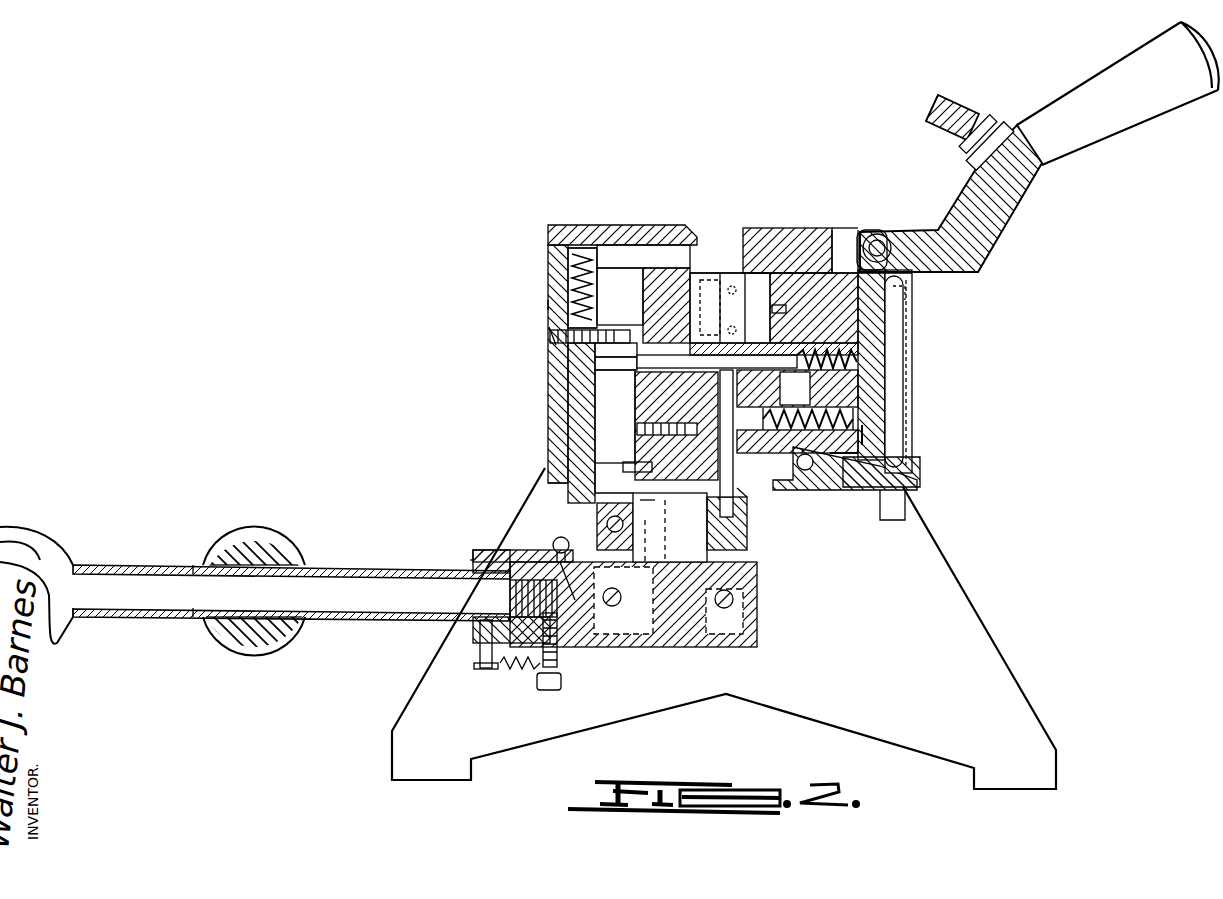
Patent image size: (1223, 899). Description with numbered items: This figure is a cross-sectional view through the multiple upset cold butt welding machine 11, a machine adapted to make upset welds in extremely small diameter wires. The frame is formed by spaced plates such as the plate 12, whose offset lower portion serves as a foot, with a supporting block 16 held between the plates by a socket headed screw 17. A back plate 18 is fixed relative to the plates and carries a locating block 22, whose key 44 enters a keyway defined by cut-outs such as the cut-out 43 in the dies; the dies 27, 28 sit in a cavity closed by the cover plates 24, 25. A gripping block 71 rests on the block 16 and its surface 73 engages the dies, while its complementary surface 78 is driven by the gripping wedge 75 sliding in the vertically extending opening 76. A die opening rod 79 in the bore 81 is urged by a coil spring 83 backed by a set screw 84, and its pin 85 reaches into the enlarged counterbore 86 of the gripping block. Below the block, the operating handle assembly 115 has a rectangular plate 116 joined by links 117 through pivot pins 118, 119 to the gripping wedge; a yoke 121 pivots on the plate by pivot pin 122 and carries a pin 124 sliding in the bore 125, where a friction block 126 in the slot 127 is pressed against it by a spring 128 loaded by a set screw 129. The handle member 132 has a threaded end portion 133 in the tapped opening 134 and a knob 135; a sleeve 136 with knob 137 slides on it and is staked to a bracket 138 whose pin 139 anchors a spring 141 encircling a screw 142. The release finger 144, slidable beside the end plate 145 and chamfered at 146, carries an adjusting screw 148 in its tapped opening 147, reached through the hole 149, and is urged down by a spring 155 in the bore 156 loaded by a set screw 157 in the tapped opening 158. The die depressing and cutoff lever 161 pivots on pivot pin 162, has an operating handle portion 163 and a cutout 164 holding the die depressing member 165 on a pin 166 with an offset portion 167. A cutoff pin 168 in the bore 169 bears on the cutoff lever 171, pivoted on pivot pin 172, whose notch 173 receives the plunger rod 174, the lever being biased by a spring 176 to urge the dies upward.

The multiple upset cold butt welding machine 11 is at (440, 325).
The plate 12 is at (955, 560).
The supporting block 16 is at (560, 405).
The socket headed screw 17 is at (716, 389).
The back plate 18 is at (905, 358).
The locating block 22 is at (895, 335).
The cover plate 24 is at (828, 228).
The cover plate 25 is at (690, 270).
The die 27 is at (778, 303).
The die 28 is at (835, 216).
The cut-out 43 is at (856, 228).
The key 44 is at (877, 222).
The gripping block 71 is at (660, 265).
The surface 73 is at (745, 245).
The gripping wedge 75 is at (555, 318).
The vertically extending opening 76 is at (548, 432).
The complementary surface 78 is at (612, 222).
The die opening rod 79 is at (760, 270).
The bore 81 is at (616, 361).
The coil spring 83 is at (870, 365).
The set screw 84 is at (814, 309).
The pin 85 is at (774, 356).
The enlarged counterbore 86 is at (729, 309).
The operating handle assembly 115 is at (420, 557).
The plate 116 is at (760, 575).
The link 117 is at (670, 527).
The pivot pin 118 is at (612, 607).
The pivot pin 119 is at (600, 520).
The yoke 121 is at (750, 538).
The pivot pin 122 is at (760, 605).
The pin 124 is at (760, 478).
The bore 125 is at (676, 426).
The friction block 126 is at (797, 388).
The slot 127 is at (880, 440).
The spring 128 is at (800, 388).
The set screw 129 is at (860, 418).
The handle member 132 is at (105, 580).
The threaded end portion 133 is at (591, 581).
The tapped opening 134 is at (508, 598).
The knob 135 is at (35, 540).
The sleeve 136 is at (350, 620).
The knob 137 is at (255, 542).
The bracket 138 is at (470, 562).
The pin 139 is at (478, 632).
The spring 141 is at (500, 668).
The screw 142 is at (551, 690).
The release finger 144 is at (548, 455).
The end plate 145 is at (548, 385).
The chamfer 146 is at (560, 478).
The tapped opening 147 is at (553, 545).
The adjusting screw 148 is at (565, 360).
The hole 149 is at (548, 336).
The spring 155 is at (567, 285).
The bore 156 is at (567, 310).
The set screw 157 is at (568, 258).
The tapped opening 158 is at (600, 245).
The die depressing and cutoff lever 161 is at (1000, 215).
The pivot pin 162 is at (890, 240).
The operating handle portion 163 is at (1150, 100).
The cutout 164 is at (1000, 130).
The die depressing member 165 is at (945, 95).
The pin 166 is at (980, 110).
The offset portion 167 is at (925, 110).
The cutoff pin 168 is at (912, 282).
The bore 169 is at (910, 294).
The cutoff lever 171 is at (897, 500).
The pivot pin 172 is at (820, 478).
The notch 173 is at (669, 494).
The plunger rod 174 is at (667, 439).
The spring 176 is at (885, 470).